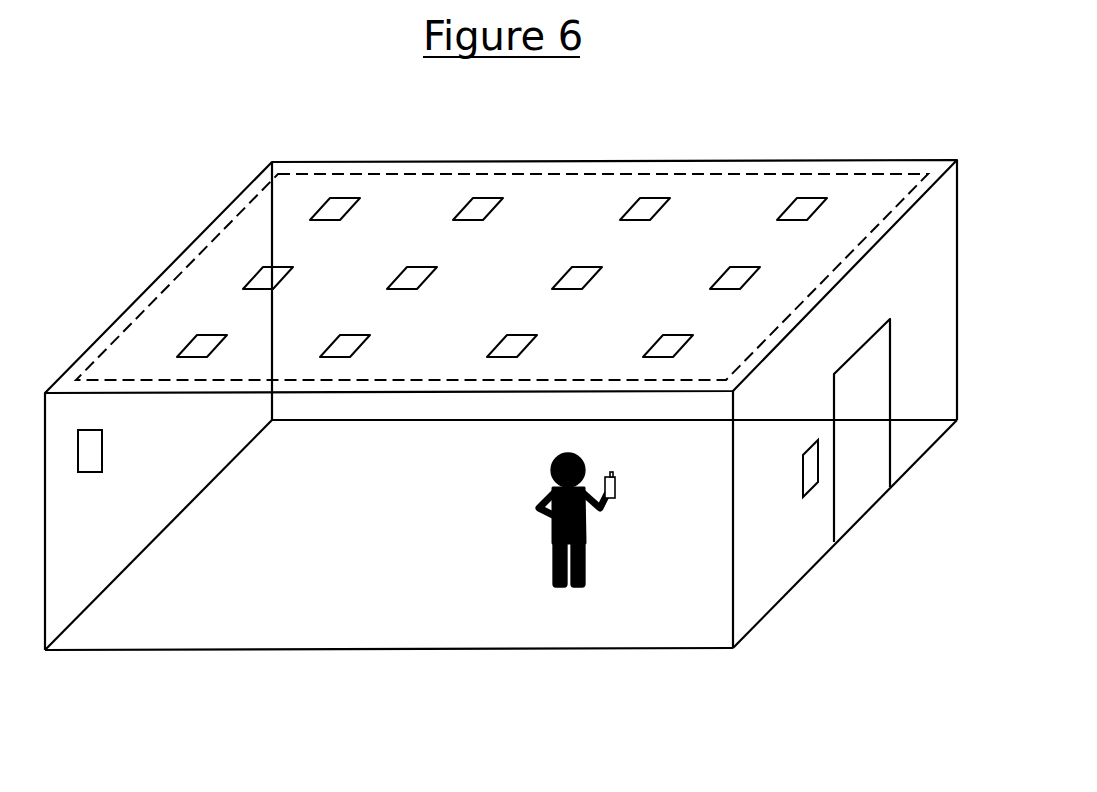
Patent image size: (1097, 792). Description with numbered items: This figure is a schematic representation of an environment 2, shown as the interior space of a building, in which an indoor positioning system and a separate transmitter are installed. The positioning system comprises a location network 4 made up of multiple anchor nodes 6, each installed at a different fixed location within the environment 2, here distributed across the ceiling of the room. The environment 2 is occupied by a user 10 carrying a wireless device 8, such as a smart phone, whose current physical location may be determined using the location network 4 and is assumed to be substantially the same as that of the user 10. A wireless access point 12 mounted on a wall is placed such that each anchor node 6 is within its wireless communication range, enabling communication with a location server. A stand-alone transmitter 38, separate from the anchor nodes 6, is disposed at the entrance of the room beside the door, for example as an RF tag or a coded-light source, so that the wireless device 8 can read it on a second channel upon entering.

The environment 2 is at (780, 160).
The location network 4 is at (608, 173).
The anchor nodes 6 is at (650, 209).
The wireless device 8 is at (616, 484).
The user 10 is at (556, 540).
The wireless access point 12 is at (102, 455).
The separate transmitter 38 is at (810, 494).